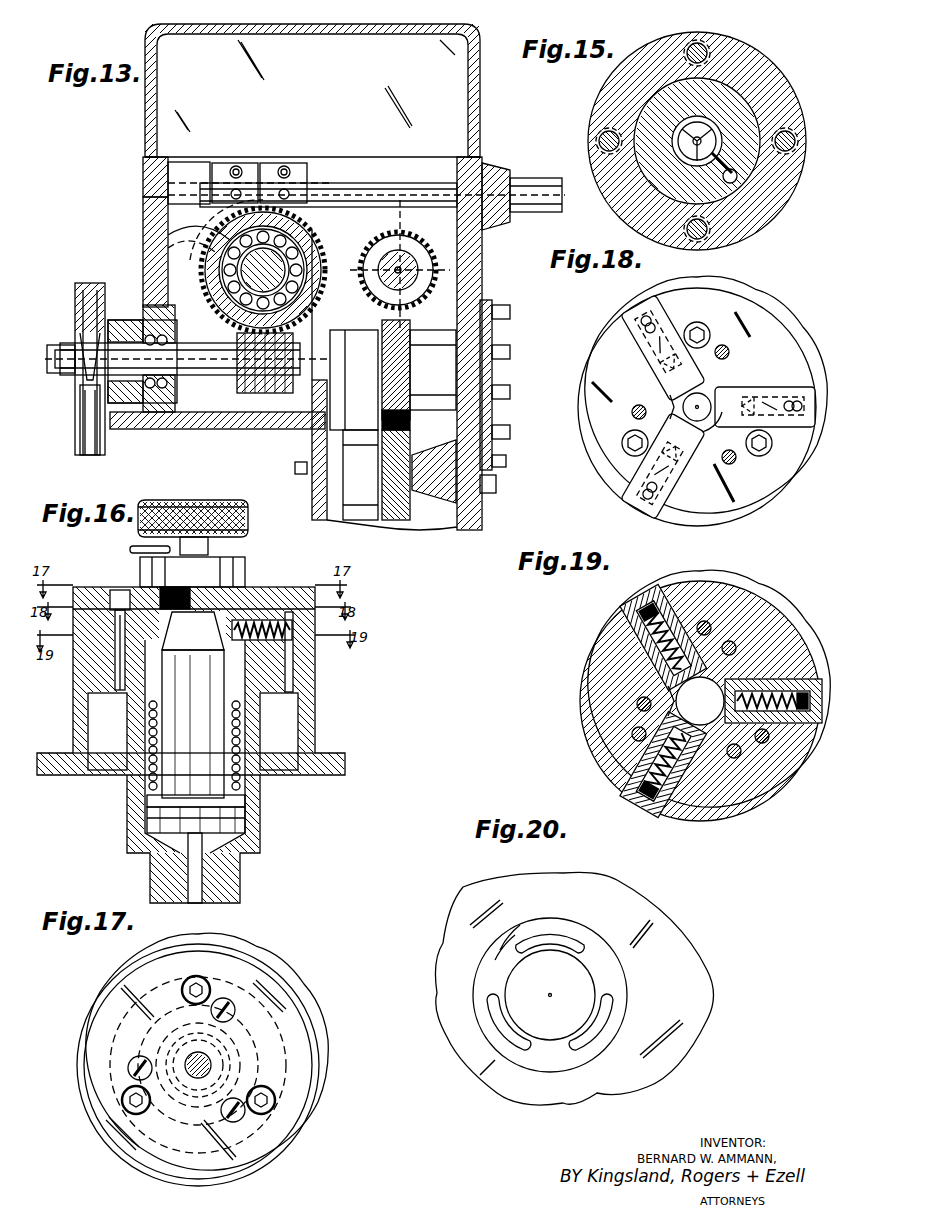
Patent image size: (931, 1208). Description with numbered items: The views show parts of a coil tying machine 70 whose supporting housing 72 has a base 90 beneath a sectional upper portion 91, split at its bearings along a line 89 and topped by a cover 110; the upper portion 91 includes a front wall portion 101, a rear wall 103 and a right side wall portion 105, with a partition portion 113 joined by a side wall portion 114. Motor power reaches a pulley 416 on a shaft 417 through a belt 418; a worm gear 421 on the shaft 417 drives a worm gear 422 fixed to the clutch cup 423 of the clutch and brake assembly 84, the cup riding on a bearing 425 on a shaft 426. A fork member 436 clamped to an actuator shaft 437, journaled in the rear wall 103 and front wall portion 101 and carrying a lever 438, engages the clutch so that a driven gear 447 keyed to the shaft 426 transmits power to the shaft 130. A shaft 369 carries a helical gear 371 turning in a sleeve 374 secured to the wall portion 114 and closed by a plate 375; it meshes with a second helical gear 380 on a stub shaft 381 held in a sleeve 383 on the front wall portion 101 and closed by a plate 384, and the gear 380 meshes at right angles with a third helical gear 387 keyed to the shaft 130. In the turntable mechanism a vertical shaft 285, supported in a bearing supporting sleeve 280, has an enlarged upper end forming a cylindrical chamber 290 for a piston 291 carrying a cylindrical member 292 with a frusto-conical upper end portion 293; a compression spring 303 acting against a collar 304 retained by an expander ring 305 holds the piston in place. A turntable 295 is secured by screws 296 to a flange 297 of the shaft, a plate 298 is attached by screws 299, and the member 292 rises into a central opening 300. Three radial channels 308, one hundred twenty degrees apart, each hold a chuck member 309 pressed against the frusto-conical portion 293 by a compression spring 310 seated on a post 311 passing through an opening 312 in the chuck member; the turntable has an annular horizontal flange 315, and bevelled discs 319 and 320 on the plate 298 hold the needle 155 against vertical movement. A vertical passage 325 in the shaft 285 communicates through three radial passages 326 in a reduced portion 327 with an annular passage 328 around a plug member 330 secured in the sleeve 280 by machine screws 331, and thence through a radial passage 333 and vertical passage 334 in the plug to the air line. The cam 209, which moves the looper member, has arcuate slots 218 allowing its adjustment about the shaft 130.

In FIG. 13, the coil tying machine 70 is at (120, 192).
In FIG. 13, the supporting housing 72 is at (450, 535).
In FIG. 13, the clutch and brake assembly 84 is at (345, 230).
In FIG. 13, the split line 89 is at (482, 269).
In FIG. 13, the base 90 is at (485, 515).
In FIG. 13, the sectional upper portion 91 is at (143, 216).
In FIG. 13, the front wall portion 101 is at (482, 252).
In FIG. 13, the rear wall 103 is at (143, 168).
In FIG. 13, the right side wall portion 105 is at (432, 157).
In FIG. 13, the cover 110 is at (155, 28).
In FIG. 13, the partition portion 113 is at (205, 429).
In FIG. 13, the side wall portion 114 is at (312, 494).
In FIG. 13, the shaft 130 is at (400, 265).
In FIG. 16, the needle 155 is at (100, 585).
In FIG. 20, the cam 209 is at (690, 970).
In FIG. 20, the arcuate slots 218 is at (575, 940).
In FIG. 15, the bearing supporting sleeve 280 is at (755, 230).
In FIG. 16, the shaft 285 is at (260, 855).
In FIG. 15, the shaft 285 is at (660, 180).
In FIG. 16, the cylindrical chamber 290 is at (245, 790).
In FIG. 16, the piston 291 is at (245, 820).
In FIG. 17, the piston 291 is at (150, 1038).
In FIG. 16, the cylindrical member 292 is at (170, 805).
In FIG. 18, the cylindrical member 292 is at (702, 402).
In FIG. 19, the cylindrical member 292 is at (678, 706).
In FIG. 17, the cylindrical member 292 is at (232, 1068).
In FIG. 16, the frusto-conical upper end portion 293 is at (193, 705).
In FIG. 18, the frusto-conical upper end portion 293 is at (712, 430).
In FIG. 19, the frusto-conical upper end portion 293 is at (676, 701).
In FIG. 16, the turntable 295 is at (315, 735).
In FIG. 18, the turntable 295 is at (607, 472).
In FIG. 19, the turntable 295 is at (595, 706).
In FIG. 16, the screws 296 is at (118, 660).
In FIG. 18, the screws 296 is at (707, 332).
In FIG. 19, the screws 296 is at (704, 621).
In FIG. 17, the screws 296 is at (203, 987).
In FIG. 16, the flange 297 is at (110, 685).
In FIG. 17, the flange 297 is at (285, 1045).
In FIG. 16, the plate 298 is at (290, 587).
In FIG. 17, the plate 298 is at (265, 985).
In FIG. 18, the screws 299 is at (730, 354).
In FIG. 19, the screws 299 is at (730, 641).
In FIG. 17, the screws 299 is at (235, 1010).
In FIG. 16, the central opening 300 is at (150, 612).
In FIG. 18, the central opening 300 is at (668, 402).
In FIG. 19, the central opening 300 is at (670, 696).
In FIG. 16, the compression spring 303 is at (242, 760).
In FIG. 16, the collar 304 is at (262, 700).
In FIG. 16, the expander ring 305 is at (290, 680).
In FIG. 16, the radially extending channels 308 is at (290, 665).
In FIG. 18, the radially extending channels 308 is at (647, 324).
In FIG. 19, the radially extending channels 308 is at (636, 646).
In FIG. 16, the chuck member 309 is at (280, 672).
In FIG. 18, the chuck member 309 is at (667, 374).
In FIG. 19, the chuck member 309 is at (672, 620).
In FIG. 16, the compression spring 310 is at (270, 576).
In FIG. 19, the compression spring 310 is at (755, 680).
In FIG. 16, the post 311 is at (298, 645).
In FIG. 18, the post 311 is at (642, 312).
In FIG. 19, the post 311 is at (645, 613).
In FIG. 16, the opening 312 is at (290, 587).
In FIG. 18, the opening 312 is at (657, 332).
In FIG. 16, the annular horizontal flange 315 is at (345, 765).
In FIG. 18, the annular horizontal flange 315 is at (767, 512).
In FIG. 19, the annular horizontal flange 315 is at (757, 817).
In FIG. 17, the annular horizontal flange 315 is at (326, 1056).
In FIG. 16, the bevelled disc 319 is at (208, 500).
In FIG. 16, the bevelled disc 320 is at (245, 565).
In FIG. 16, the vertical passage 325 is at (202, 888).
In FIG. 15, the vertical passage 325 is at (700, 141).
In FIG. 17, the vertical passage 325 is at (198, 1078).
In FIG. 15, the radially extending passages 326 is at (680, 131).
In FIG. 15, the reduced portion 327 is at (716, 131).
In FIG. 15, the annular passage 328 is at (680, 151).
In FIG. 15, the plug member 330 is at (680, 141).
In FIG. 15, the machine screws 331 is at (708, 48).
In FIG. 15, the radial passage 333 is at (718, 179).
In FIG. 15, the vertical passage 334 is at (738, 181).
In FIG. 13, the shaft 369 is at (496, 484).
In FIG. 13, the helical gear 371 is at (430, 500).
In FIG. 13, the sleeve 374 is at (392, 522).
In FIG. 13, the plate 375 is at (300, 462).
In FIG. 13, the second helical gear 380 is at (410, 335).
In FIG. 13, the stub shaft 381 is at (372, 385).
In FIG. 13, the sleeve 383 is at (440, 345).
In FIG. 13, the plate 384 is at (510, 392).
In FIG. 13, the third helical gear 387 is at (392, 232).
In FIG. 13, the second pulley 416 is at (80, 436).
In FIG. 13, the shaft 417 is at (200, 375).
In FIG. 13, the belt 418 is at (85, 459).
In FIG. 13, the worm gear 421 is at (245, 392).
In FIG. 13, the worm gear 422 is at (258, 163).
In FIG. 13, the clutch cup 423 is at (312, 183).
In FIG. 13, the bearing 425 is at (232, 190).
In FIG. 13, the shaft 426 is at (215, 255).
In FIG. 13, the fork member 436 is at (290, 163).
In FIG. 13, the actuator shaft 437 is at (516, 238).
In FIG. 13, the lever 438 is at (535, 178).
In FIG. 13, the driven gear 447 is at (350, 176).